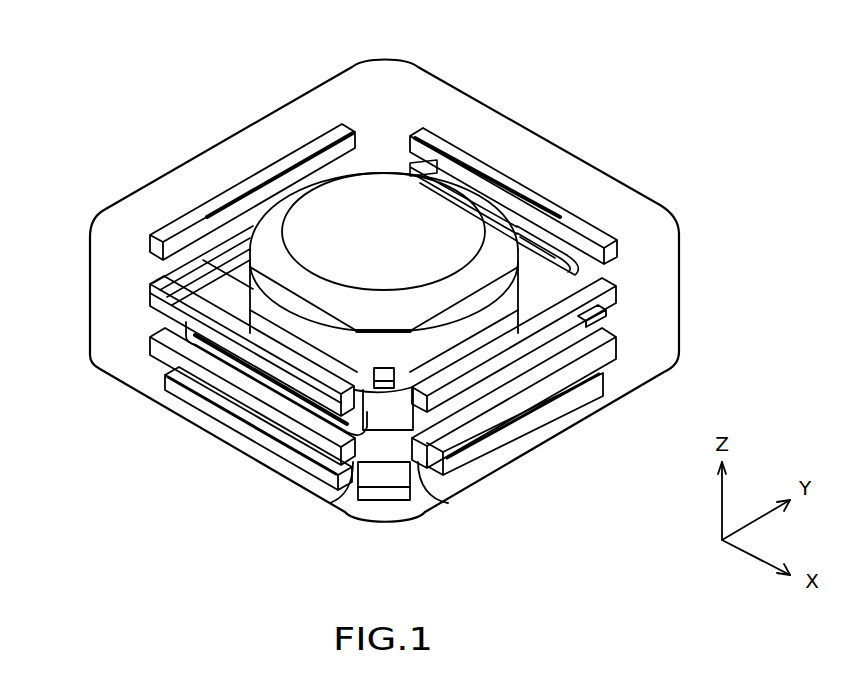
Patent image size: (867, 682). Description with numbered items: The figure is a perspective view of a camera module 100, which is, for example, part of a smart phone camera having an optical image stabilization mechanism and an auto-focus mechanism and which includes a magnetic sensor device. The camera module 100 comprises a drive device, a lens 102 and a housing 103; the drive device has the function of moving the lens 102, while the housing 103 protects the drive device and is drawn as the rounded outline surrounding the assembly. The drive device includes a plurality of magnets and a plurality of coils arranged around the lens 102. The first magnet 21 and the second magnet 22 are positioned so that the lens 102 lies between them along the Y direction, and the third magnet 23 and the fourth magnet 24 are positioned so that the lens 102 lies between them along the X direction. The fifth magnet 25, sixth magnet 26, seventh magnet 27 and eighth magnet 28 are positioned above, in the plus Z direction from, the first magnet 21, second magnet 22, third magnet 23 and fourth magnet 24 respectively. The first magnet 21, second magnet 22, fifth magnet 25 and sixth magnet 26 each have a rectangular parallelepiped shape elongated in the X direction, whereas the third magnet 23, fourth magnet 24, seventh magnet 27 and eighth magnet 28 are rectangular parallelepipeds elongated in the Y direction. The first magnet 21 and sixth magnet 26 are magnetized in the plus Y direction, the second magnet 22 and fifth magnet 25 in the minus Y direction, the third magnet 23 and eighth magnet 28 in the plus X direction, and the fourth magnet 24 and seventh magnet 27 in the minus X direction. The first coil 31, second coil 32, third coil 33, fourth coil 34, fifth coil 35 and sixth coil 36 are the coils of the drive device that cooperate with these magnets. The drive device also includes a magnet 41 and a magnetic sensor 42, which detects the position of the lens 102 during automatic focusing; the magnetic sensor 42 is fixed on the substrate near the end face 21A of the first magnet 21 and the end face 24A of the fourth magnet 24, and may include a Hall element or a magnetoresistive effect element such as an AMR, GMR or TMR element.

The camera module 100 is at (663, 145).
The lens 102 is at (383, 217).
The housing 103 is at (528, 137).
The first magnet 21 is at (210, 382).
The second magnet 22 is at (624, 264).
The third magnet 23 is at (227, 288).
The fourth magnet 24 is at (590, 364).
The fifth magnet 25 is at (200, 323).
The sixth magnet 26 is at (444, 133).
The seventh magnet 27 is at (245, 190).
The eighth magnet 28 is at (600, 313).
The first coil 31 is at (255, 437).
The second coil 32 is at (600, 316).
The third coil 33 is at (195, 275).
The fourth coil 34 is at (537, 421).
The fifth coil 35 is at (197, 355).
The sixth coil 36 is at (565, 262).
The end face of the first magnet 21A is at (353, 497).
The end face of the fourth magnet 24A is at (448, 497).
The magnet 41 is at (385, 388).
The magnetic sensor 42 is at (377, 483).